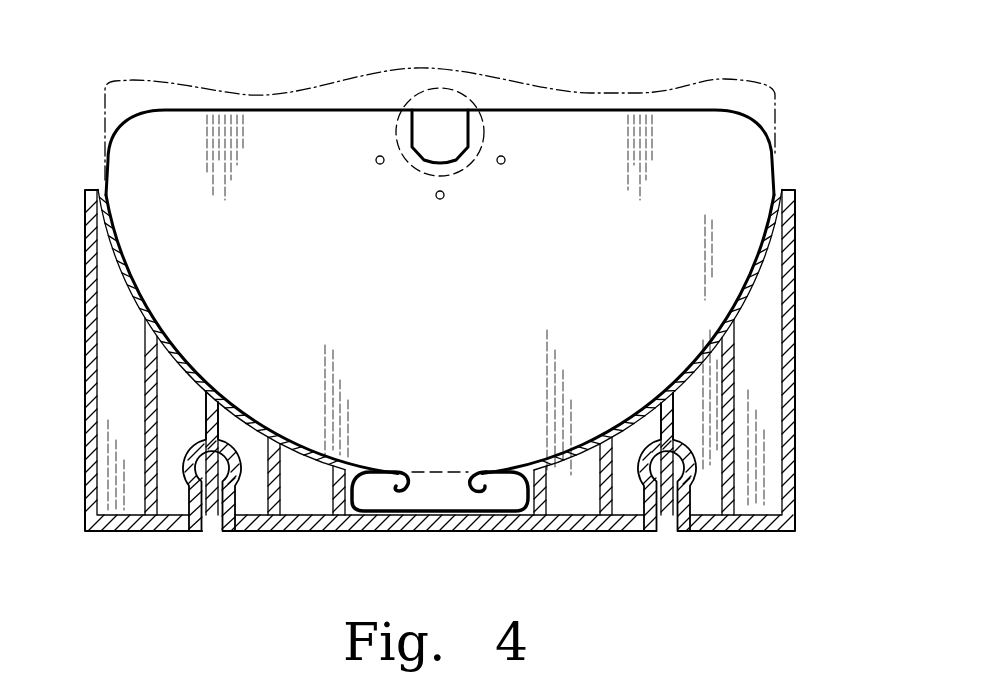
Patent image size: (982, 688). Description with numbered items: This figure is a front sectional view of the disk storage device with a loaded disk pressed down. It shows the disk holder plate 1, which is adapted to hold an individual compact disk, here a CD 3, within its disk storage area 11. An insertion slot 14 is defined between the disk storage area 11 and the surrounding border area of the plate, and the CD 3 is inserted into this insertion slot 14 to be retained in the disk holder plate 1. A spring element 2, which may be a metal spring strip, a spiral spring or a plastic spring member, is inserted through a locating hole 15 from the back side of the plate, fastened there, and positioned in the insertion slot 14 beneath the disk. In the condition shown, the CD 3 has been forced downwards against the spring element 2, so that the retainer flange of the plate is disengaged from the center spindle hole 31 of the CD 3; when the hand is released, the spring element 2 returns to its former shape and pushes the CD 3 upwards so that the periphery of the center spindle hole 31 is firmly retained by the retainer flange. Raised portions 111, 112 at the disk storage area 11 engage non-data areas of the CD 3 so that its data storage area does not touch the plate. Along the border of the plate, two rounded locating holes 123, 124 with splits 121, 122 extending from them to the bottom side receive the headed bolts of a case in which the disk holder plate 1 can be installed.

The disk holder plate 1 is at (93, 175).
The disk storage area 11 is at (740, 143).
The raised portion 111 is at (376, 158).
The raised portion 112 is at (506, 160).
The CD 3 is at (663, 86).
The center spindle hole 31 is at (442, 86).
The insertion slot 14 is at (342, 463).
The locating hole 15 is at (498, 458).
The spring element 2 is at (417, 499).
The split 121 is at (212, 517).
The split 122 is at (667, 502).
The rounded locating hole 123 is at (202, 472).
The rounded locating hole 124 is at (661, 474).